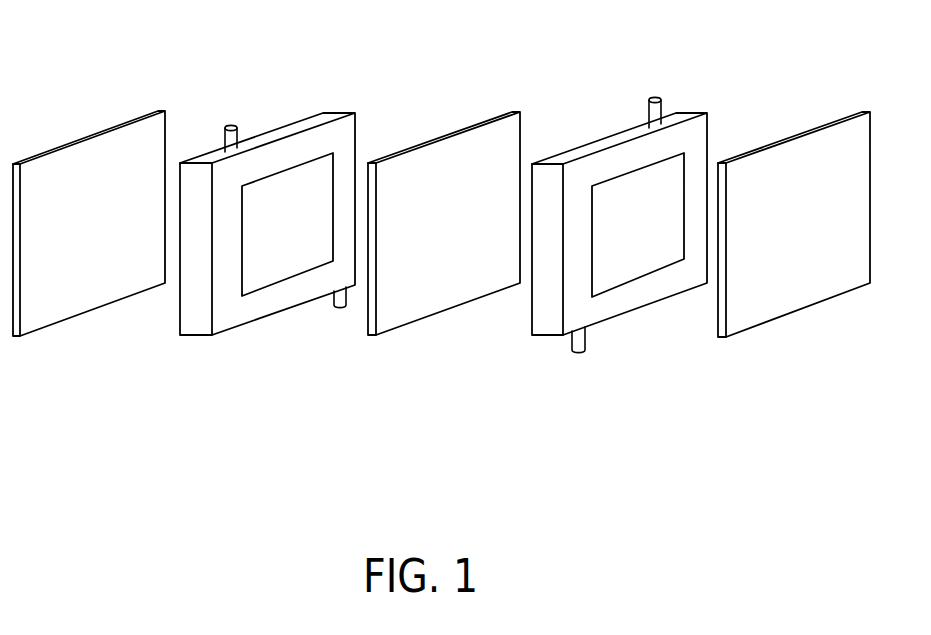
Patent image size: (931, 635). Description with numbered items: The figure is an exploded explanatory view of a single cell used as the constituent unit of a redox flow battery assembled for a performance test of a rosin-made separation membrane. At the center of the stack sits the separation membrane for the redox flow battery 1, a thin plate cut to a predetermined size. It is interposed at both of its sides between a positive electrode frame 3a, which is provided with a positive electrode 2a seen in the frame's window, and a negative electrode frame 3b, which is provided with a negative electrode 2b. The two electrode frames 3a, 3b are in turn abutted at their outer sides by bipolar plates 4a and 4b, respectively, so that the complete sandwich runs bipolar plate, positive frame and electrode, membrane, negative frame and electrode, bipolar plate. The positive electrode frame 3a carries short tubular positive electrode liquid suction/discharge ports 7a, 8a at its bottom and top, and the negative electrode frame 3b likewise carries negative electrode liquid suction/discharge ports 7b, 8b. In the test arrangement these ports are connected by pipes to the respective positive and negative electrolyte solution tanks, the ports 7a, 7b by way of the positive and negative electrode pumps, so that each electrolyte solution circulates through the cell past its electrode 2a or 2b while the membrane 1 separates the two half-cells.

The separation membrane for the redox flow battery 1 is at (436, 138).
The positive electrode 2a is at (273, 262).
The negative electrode 2b is at (658, 247).
The positive electrode frame 3a is at (270, 140).
The negative electrode frame 3b is at (623, 136).
The bipolar plate 4a is at (76, 140).
The bipolar plate 4b is at (793, 138).
The positive electrode liquid suction/discharge port 7a is at (333, 307).
The negative electrode liquid suction/discharge port 7b is at (580, 352).
The positive electrode liquid suction/discharge port 8a is at (228, 124).
The negative electrode liquid suction/discharge port 8b is at (658, 97).